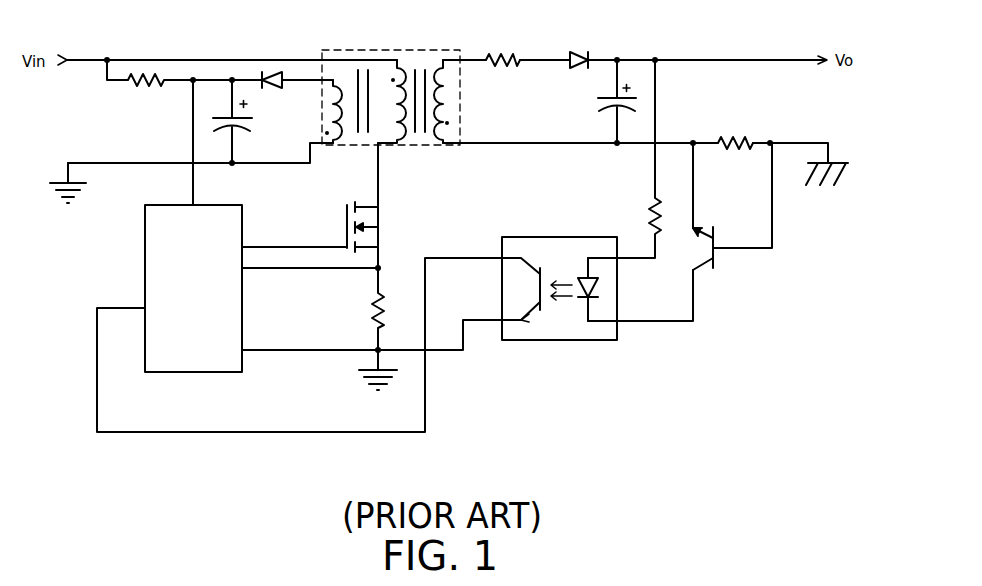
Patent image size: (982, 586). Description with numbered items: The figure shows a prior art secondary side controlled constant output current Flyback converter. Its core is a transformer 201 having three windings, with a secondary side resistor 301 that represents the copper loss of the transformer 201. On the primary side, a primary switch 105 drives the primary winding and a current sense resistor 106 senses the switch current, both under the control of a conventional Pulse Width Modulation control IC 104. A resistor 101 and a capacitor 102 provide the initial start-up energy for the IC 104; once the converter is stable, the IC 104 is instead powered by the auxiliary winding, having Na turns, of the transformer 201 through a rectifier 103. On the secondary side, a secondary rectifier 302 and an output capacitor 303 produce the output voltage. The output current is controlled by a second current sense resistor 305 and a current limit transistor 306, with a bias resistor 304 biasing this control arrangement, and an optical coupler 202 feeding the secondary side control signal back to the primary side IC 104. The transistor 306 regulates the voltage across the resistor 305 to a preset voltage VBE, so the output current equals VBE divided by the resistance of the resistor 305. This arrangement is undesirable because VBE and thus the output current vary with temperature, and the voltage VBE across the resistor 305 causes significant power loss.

The resistor 101 is at (149, 85).
The capacitor 102 is at (246, 130).
The rectifier 103 is at (273, 89).
The Pulse Width Modulation control IC 104 is at (206, 294).
The primary switch 105 is at (345, 222).
The current sense resistor 106 is at (369, 319).
The transformer 201 is at (434, 49).
The optical coupler 202 is at (559, 288).
The secondary side resistor 301 is at (503, 52).
The secondary rectifier 302 is at (573, 51).
The output capacitor 303 is at (606, 113).
The bias resistor 304 is at (652, 211).
The second current sense resistor 305 is at (736, 137).
The current limit transistor 306 is at (715, 238).